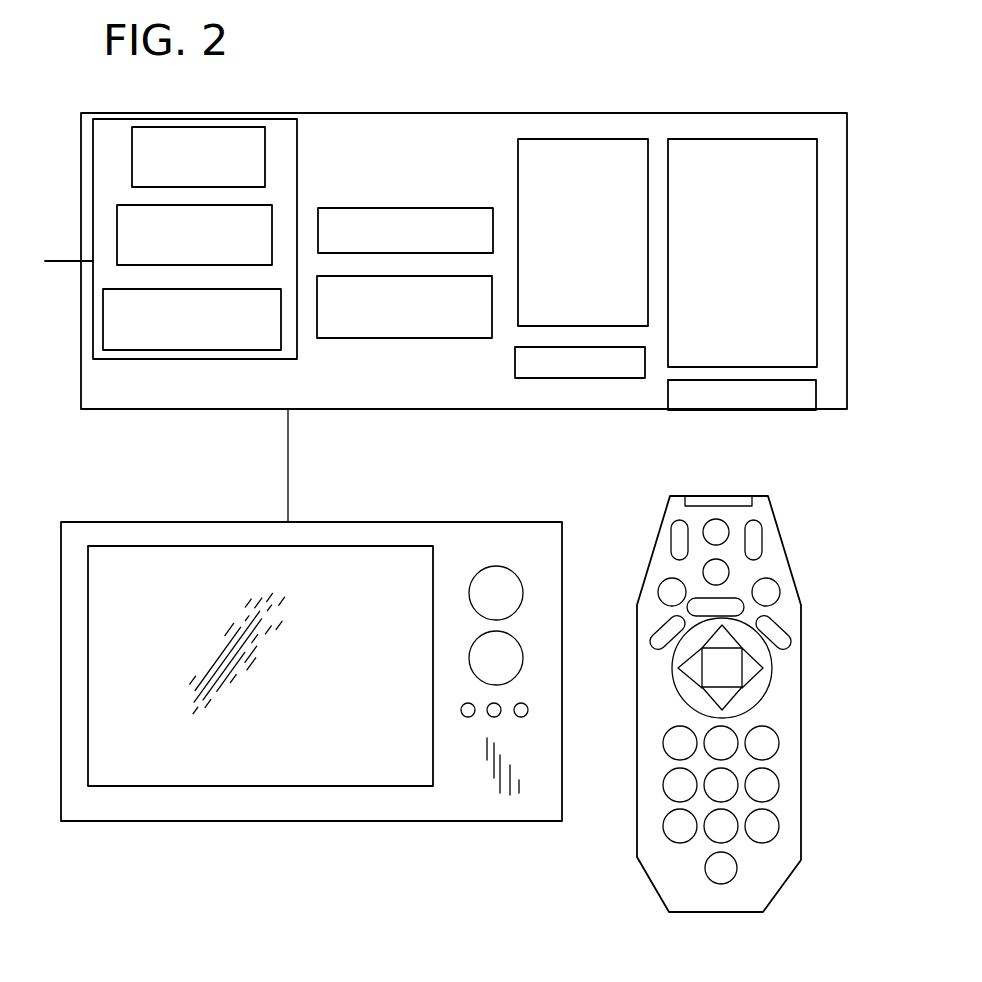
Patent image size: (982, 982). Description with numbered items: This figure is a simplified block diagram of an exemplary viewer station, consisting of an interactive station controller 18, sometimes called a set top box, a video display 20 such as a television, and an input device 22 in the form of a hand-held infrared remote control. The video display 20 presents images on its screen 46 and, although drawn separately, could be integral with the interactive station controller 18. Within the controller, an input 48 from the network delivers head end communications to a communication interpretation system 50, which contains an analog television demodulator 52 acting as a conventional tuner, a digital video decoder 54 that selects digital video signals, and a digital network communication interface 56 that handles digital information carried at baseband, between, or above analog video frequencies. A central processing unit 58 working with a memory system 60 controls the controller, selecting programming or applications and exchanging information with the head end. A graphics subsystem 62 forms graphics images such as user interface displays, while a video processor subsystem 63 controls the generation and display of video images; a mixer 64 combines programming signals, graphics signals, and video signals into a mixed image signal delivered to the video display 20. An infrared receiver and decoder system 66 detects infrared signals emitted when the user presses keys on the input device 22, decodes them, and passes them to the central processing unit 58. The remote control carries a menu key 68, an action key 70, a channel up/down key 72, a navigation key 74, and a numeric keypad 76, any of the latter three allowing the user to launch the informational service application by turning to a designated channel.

The interactive station controller 18 is at (358, 409).
The video display 20 is at (418, 522).
The input device 22 is at (653, 555).
The screen 46 is at (200, 578).
The input 48 is at (67, 262).
The communication interpretation system 50 is at (297, 160).
The analog television demodulator 52 is at (212, 127).
The digital video decoder 54 is at (273, 215).
The digital network communication interface 56 is at (227, 350).
The central processing unit 58 is at (590, 150).
The memory system 60 is at (802, 260).
The graphics subsystem 62 is at (398, 208).
The video processor subsystem 63 is at (407, 338).
The mixer 64 is at (567, 378).
The infrared receiver and decoder system 66 is at (777, 412).
The menu key 68 is at (725, 597).
The action key 70 is at (653, 634).
The channel up/down key 72 is at (753, 542).
The navigation key 74 is at (687, 693).
The numeric keypad 76 is at (652, 787).